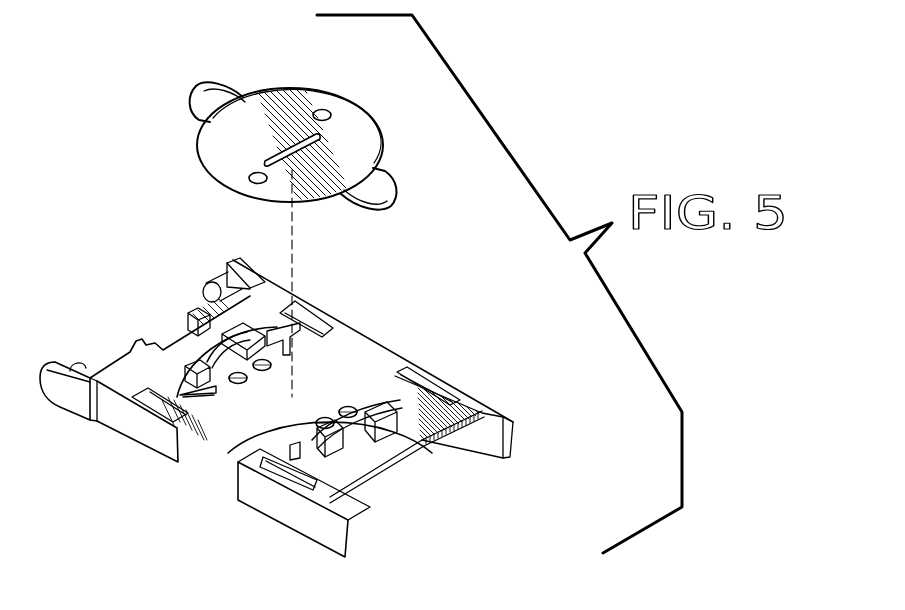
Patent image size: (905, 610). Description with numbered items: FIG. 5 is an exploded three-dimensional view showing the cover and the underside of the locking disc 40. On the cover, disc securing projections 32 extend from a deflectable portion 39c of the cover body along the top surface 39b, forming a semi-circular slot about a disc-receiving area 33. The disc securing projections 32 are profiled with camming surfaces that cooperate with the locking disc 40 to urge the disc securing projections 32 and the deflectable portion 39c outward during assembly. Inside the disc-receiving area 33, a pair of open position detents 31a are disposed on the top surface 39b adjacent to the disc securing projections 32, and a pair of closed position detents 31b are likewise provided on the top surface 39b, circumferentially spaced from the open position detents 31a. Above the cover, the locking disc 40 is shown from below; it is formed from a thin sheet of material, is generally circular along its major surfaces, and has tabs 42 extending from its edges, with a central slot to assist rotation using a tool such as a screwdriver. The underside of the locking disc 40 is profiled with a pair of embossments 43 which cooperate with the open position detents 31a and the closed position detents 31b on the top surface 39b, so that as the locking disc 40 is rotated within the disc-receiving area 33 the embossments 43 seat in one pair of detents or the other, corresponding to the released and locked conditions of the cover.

The open position detents 31a is at (352, 408).
The closed position detents 31b is at (258, 358).
The disc securing projections 32 is at (402, 398).
The disc-receiving area 33 is at (302, 393).
The top surface 39b is at (340, 343).
The deflectable portion 39c is at (183, 393).
The locking disc 40 is at (278, 85).
The tabs 42 is at (196, 97).
The embossments 43 is at (332, 116).